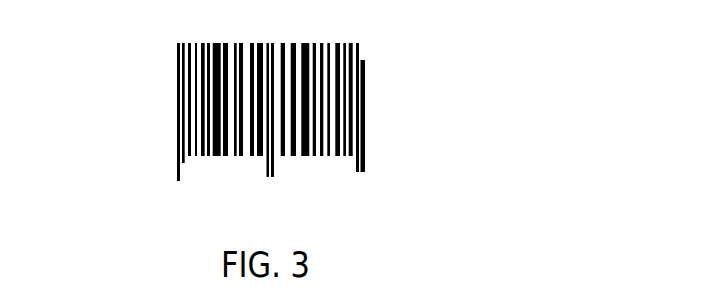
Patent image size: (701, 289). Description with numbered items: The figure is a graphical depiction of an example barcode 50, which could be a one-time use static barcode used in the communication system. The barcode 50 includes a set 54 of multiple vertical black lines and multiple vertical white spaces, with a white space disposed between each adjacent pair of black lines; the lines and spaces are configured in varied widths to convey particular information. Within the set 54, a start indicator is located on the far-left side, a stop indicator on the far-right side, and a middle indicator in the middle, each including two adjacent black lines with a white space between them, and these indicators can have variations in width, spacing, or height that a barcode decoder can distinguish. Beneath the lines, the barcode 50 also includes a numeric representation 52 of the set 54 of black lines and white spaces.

The barcode 50 is at (108, 58).
The set of multiple vertical black lines and white spaces 54 is at (363, 36).
The numeric representation 52 is at (157, 153).